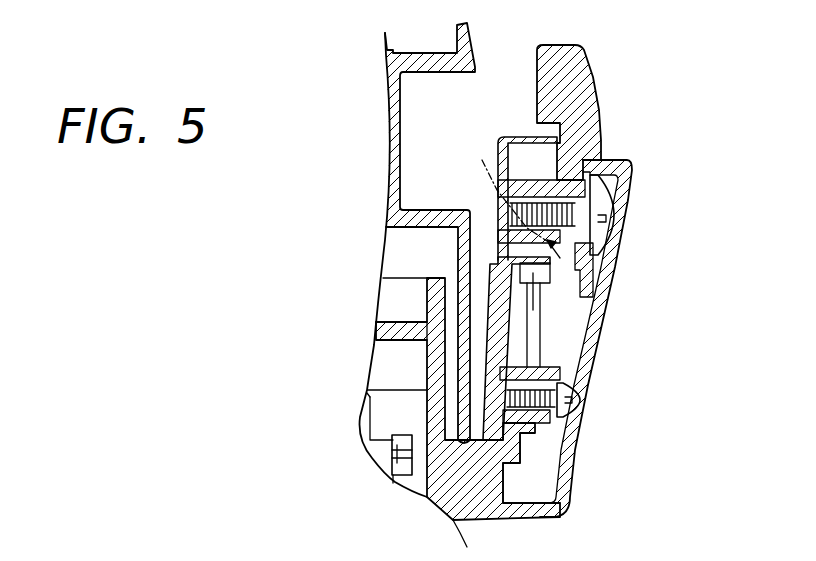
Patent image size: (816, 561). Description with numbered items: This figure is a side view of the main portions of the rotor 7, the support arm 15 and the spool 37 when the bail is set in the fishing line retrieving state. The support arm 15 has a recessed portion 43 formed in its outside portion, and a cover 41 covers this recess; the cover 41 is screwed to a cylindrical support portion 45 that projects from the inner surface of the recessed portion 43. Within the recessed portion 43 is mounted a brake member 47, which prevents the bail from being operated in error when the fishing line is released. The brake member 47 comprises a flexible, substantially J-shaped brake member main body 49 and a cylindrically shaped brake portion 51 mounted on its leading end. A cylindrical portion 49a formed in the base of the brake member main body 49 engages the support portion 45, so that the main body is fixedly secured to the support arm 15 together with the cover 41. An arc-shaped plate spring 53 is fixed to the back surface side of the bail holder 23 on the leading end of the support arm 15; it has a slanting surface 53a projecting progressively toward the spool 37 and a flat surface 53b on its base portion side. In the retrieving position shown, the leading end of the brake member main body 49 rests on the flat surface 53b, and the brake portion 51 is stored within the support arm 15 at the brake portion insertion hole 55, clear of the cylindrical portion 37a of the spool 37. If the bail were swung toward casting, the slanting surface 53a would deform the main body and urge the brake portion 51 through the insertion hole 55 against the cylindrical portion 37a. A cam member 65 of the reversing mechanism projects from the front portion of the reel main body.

The rotor 7 is at (427, 364).
The support arm 15 is at (427, 303).
The bail holder 23 is at (587, 62).
The spool 37 is at (388, 165).
The cylindrical portion 37a is at (367, 393).
The cover 41 is at (613, 287).
The recessed portion 43 is at (560, 327).
The support portion 45 is at (525, 418).
The brake member 47 is at (545, 353).
The brake member main body 49 is at (547, 310).
The cylindrical portion 49a is at (523, 433).
The brake portion 51 is at (492, 277).
The arc-shaped plate spring 53 is at (615, 232).
The slanting surface 53a is at (482, 160).
The flat surface 53b is at (560, 258).
The brake portion insertion hole 55 is at (497, 243).
The cam member 65 is at (400, 452).